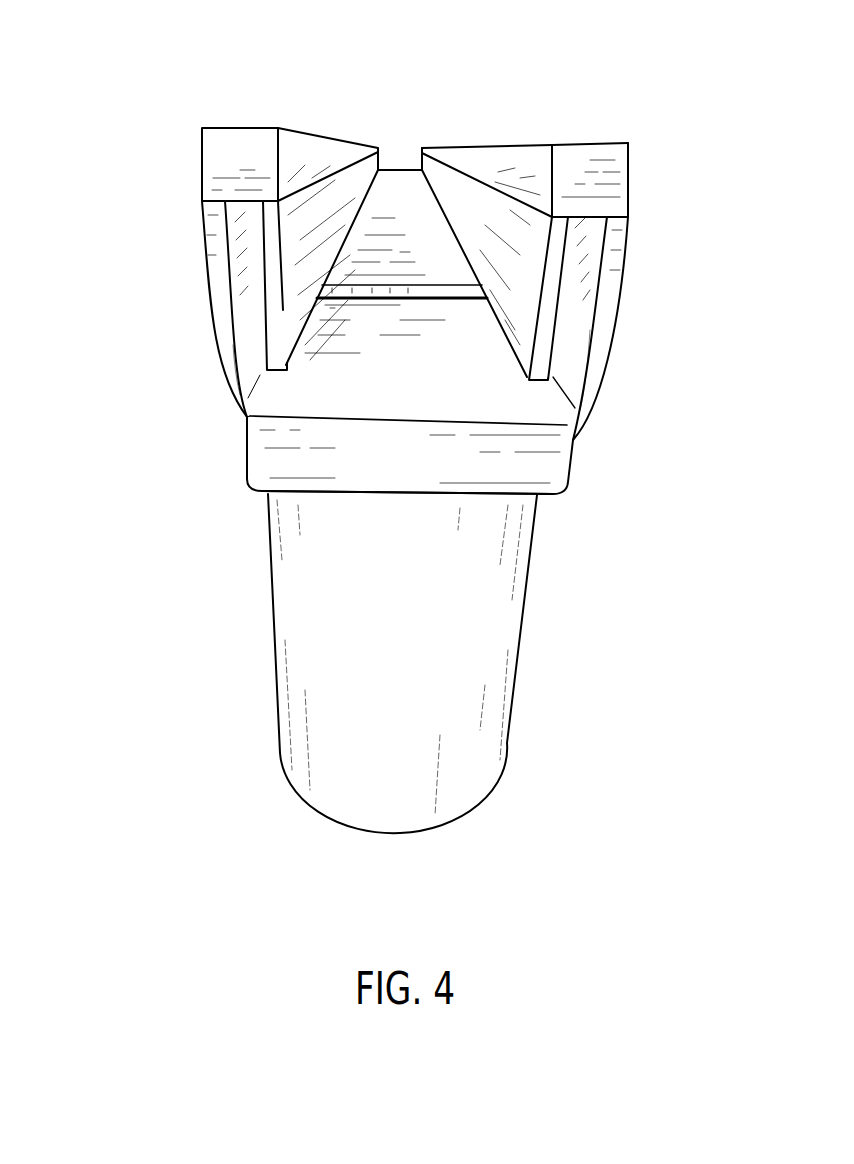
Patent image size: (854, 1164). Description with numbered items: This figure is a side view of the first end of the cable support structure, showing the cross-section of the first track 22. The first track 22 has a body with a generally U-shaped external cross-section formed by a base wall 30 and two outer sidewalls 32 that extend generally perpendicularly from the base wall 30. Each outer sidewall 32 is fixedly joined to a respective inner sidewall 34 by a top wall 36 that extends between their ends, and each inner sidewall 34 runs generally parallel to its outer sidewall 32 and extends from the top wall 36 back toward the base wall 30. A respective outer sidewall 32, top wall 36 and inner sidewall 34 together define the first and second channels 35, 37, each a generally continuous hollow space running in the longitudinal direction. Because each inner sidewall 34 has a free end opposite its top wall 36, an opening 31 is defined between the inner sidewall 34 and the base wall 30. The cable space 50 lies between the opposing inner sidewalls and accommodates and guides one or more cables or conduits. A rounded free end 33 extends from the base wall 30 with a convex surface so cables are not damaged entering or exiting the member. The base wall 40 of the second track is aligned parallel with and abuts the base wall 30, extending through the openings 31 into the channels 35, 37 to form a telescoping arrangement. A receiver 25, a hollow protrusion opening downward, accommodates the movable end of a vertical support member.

The first track 22 is at (168, 320).
The receiver 25 is at (488, 727).
The base wall 30 is at (415, 358).
The opening 31 is at (268, 392).
The outer sidewall 32 is at (210, 233).
The rounded free end 33 is at (547, 463).
The inner sidewall 34 is at (270, 257).
The first channel 35 is at (252, 342).
The top wall 36 is at (225, 167).
The second channel 37 is at (573, 340).
The base wall 40 is at (401, 194).
The cable space 50 is at (378, 207).